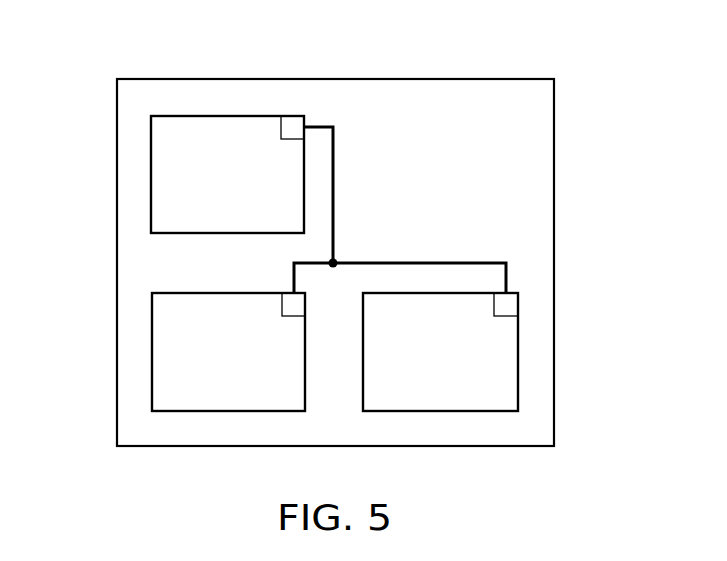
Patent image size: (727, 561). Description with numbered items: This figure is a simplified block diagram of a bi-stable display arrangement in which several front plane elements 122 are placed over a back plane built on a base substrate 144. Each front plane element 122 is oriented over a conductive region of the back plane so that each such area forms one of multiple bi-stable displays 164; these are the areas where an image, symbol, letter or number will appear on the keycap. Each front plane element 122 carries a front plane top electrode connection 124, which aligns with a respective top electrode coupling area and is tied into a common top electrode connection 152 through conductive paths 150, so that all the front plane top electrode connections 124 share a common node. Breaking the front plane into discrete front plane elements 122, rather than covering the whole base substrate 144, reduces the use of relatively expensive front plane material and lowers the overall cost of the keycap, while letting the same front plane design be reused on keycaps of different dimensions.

The front plane element 122 is at (226, 125).
The front plane top electrode connection 124 is at (293, 130).
The base substrate 144 is at (450, 90).
The conductive path 150 is at (337, 178).
The common top electrode connection 152 is at (342, 257).
The bi-stable display 164 is at (148, 173).